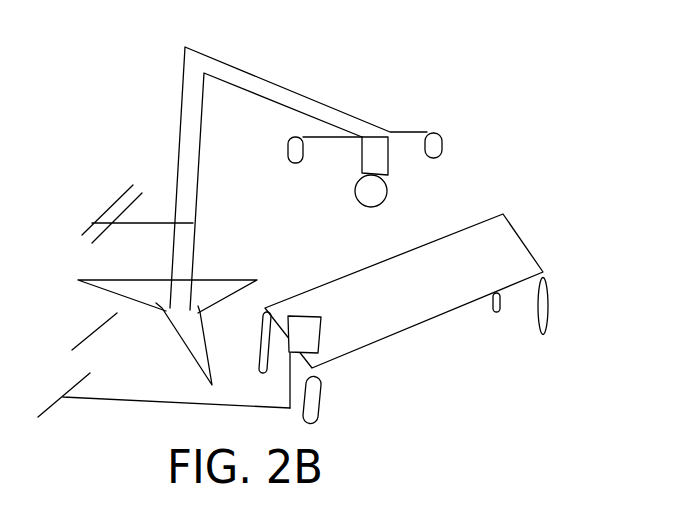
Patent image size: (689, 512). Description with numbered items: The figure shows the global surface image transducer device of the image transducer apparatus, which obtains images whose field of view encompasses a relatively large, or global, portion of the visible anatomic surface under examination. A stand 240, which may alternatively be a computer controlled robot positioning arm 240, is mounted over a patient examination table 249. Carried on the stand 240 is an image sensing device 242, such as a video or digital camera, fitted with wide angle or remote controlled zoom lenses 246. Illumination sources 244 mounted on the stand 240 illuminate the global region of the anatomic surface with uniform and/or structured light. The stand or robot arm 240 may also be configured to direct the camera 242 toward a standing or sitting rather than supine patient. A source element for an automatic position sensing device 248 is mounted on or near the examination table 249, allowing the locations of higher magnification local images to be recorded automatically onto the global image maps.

The stand 240 is at (278, 92).
The image sensing device 242 is at (383, 155).
The illumination sources 244 is at (290, 155).
The lenses 246 is at (383, 197).
The source element for automatic position sensing device 248 is at (302, 315).
The patient examination table 249 is at (525, 257).